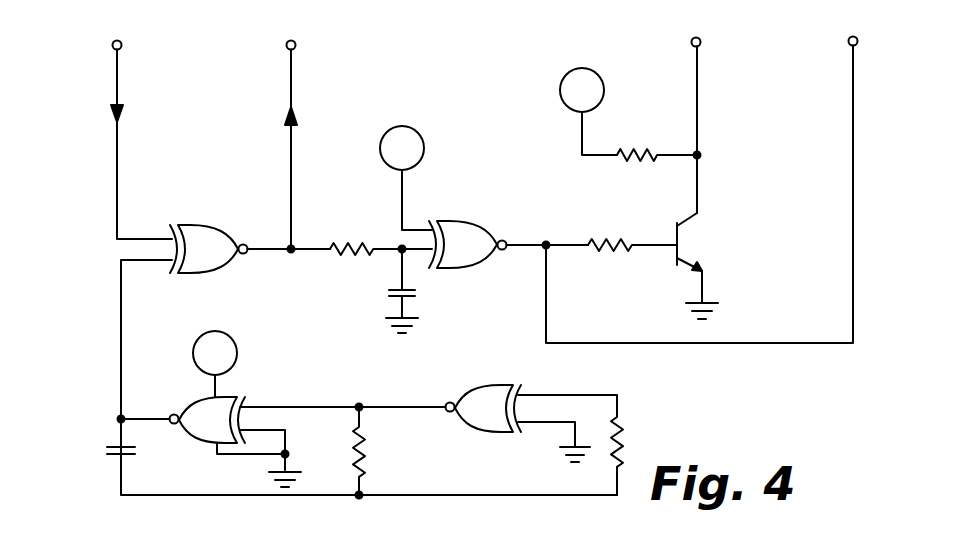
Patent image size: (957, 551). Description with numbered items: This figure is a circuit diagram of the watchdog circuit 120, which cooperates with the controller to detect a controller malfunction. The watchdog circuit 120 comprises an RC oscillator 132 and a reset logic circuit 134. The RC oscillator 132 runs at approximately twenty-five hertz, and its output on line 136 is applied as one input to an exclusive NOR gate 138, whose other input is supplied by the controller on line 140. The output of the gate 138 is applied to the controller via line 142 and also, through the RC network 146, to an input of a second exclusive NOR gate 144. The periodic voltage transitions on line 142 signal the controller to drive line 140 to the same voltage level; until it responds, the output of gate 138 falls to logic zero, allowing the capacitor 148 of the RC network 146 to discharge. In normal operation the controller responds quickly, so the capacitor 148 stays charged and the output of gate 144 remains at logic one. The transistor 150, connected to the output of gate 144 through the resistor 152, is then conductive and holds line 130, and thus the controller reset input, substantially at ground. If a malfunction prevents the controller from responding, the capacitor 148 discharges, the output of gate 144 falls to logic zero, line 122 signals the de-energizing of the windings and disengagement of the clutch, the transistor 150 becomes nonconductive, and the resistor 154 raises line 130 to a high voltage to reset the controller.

The watchdog circuit 120 is at (489, 81).
The line 122 is at (855, 265).
The line 130 is at (698, 117).
The RC oscillator 132 is at (322, 398).
The reset logic circuit 134 is at (428, 191).
The line 136 is at (121, 331).
The exclusive NOR gate 138 is at (220, 262).
The line 140 is at (117, 155).
The line 142 is at (291, 147).
The exclusive NOR gate 144 is at (488, 263).
The RC network 146 is at (382, 271).
The capacitor 148 is at (405, 298).
The transistor 150 is at (689, 224).
The resistor 152 is at (617, 238).
The resistor 154 is at (645, 148).